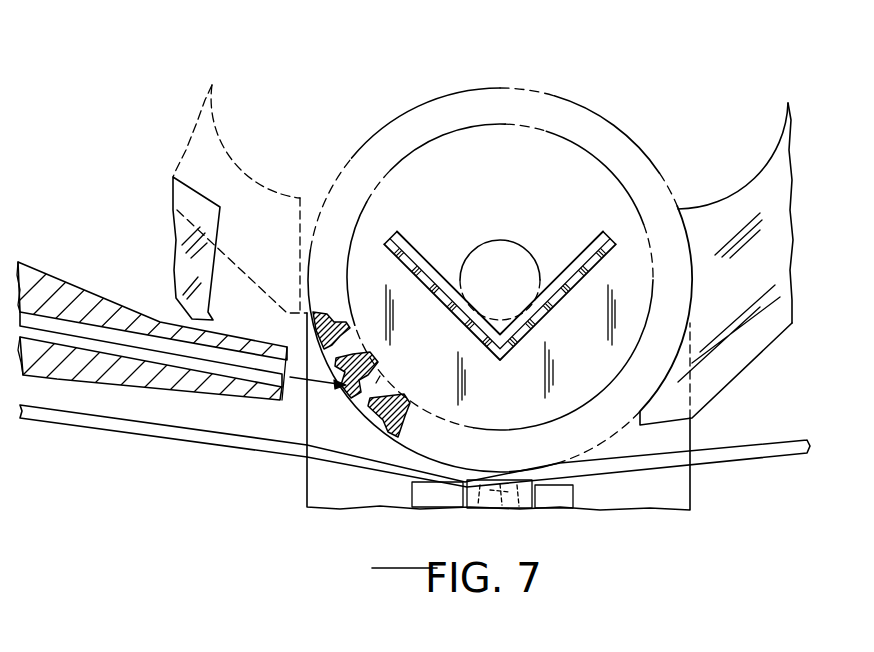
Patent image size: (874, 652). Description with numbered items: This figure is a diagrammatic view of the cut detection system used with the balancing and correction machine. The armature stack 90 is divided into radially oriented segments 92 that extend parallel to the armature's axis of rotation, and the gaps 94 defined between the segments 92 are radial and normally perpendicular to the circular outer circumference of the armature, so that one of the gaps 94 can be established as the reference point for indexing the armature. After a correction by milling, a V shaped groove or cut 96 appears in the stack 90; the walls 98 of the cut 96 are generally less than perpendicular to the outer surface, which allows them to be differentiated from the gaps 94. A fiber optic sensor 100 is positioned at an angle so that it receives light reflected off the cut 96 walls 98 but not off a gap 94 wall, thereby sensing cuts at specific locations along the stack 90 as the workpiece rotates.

The stack 90 is at (567, 388).
The segments 92 is at (349, 326).
The gaps 94 is at (440, 412).
The cut 96 is at (380, 376).
The walls 98 is at (348, 388).
The fiber optic sensor 100 is at (200, 373).